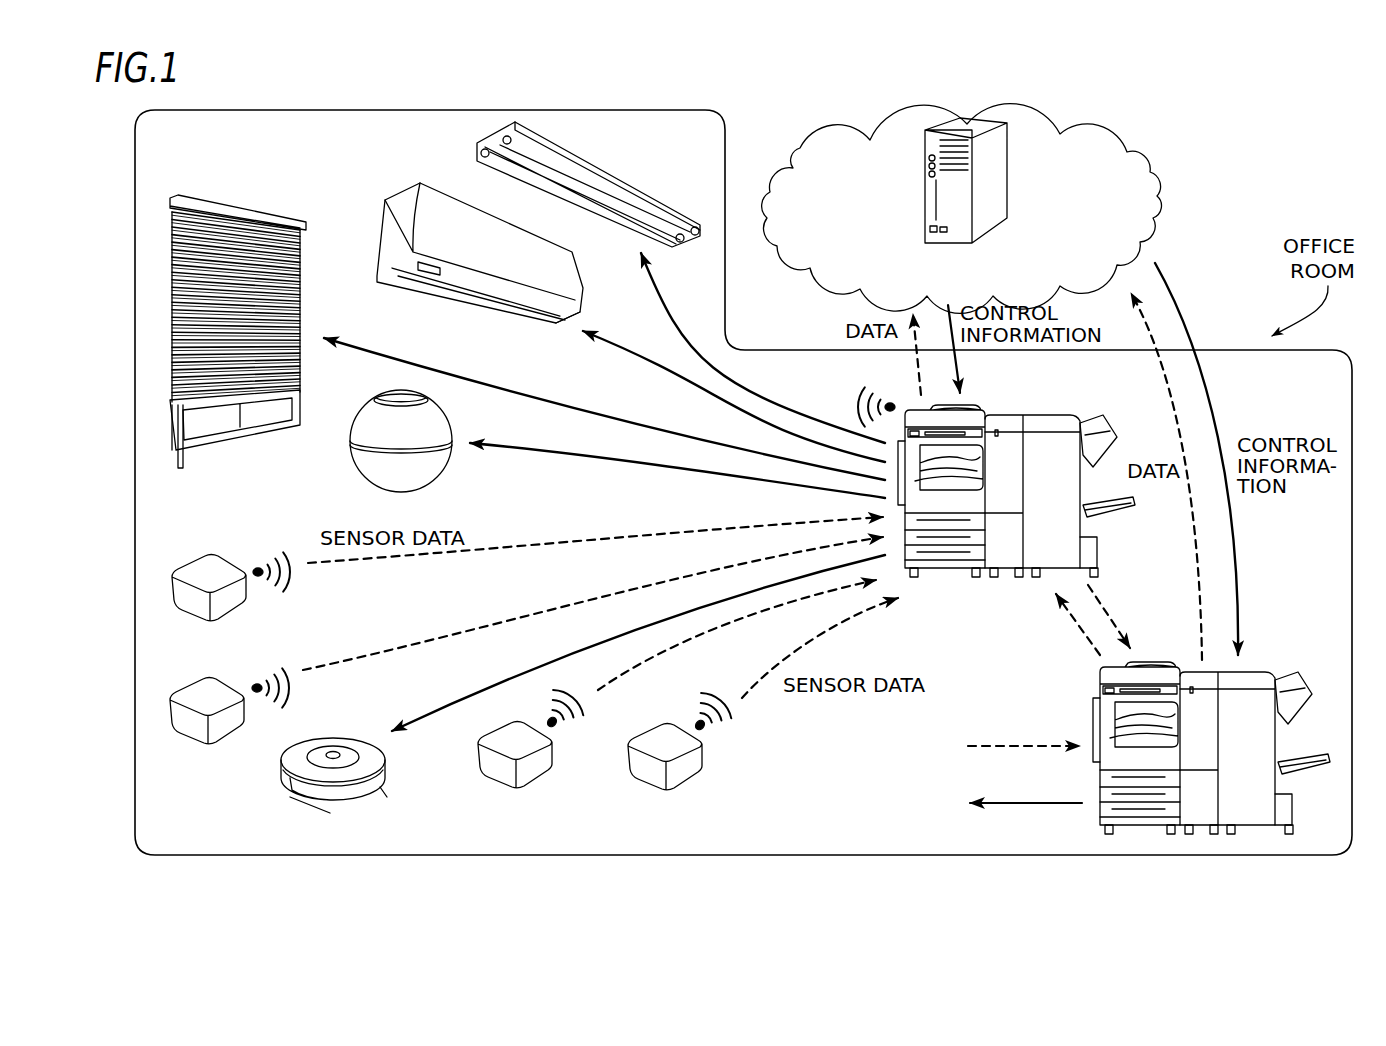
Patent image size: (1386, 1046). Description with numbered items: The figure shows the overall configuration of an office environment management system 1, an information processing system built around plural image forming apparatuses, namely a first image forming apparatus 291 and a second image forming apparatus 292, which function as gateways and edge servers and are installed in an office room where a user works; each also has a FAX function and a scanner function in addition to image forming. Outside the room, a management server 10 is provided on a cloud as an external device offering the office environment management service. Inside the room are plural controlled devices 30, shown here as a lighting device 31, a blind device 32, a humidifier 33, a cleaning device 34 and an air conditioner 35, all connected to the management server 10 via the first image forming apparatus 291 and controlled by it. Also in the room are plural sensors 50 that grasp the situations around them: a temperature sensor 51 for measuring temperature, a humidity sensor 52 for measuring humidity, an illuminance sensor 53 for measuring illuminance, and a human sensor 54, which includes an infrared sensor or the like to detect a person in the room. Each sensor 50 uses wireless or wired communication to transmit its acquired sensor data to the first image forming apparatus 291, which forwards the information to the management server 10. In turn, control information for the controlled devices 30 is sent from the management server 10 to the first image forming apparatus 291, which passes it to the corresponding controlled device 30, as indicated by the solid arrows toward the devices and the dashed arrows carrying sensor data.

The office environment management system 1 is at (1286, 182).
The management server 10 is at (832, 150).
The controlled device 30 is at (951, 802).
The lighting device 31 is at (476, 150).
The blind device 32 is at (211, 196).
The humidifier 33 is at (345, 461).
The cleaning device 34 is at (388, 800).
The air conditioner 35 is at (377, 190).
The sensor 50 is at (961, 748).
The temperature sensor 51 is at (702, 789).
The humidity sensor 52 is at (542, 789).
The illuminance sensor 53 is at (254, 607).
The human sensor 54 is at (180, 748).
The first image forming apparatus 291 is at (1015, 405).
The second image forming apparatus 292 is at (1254, 660).